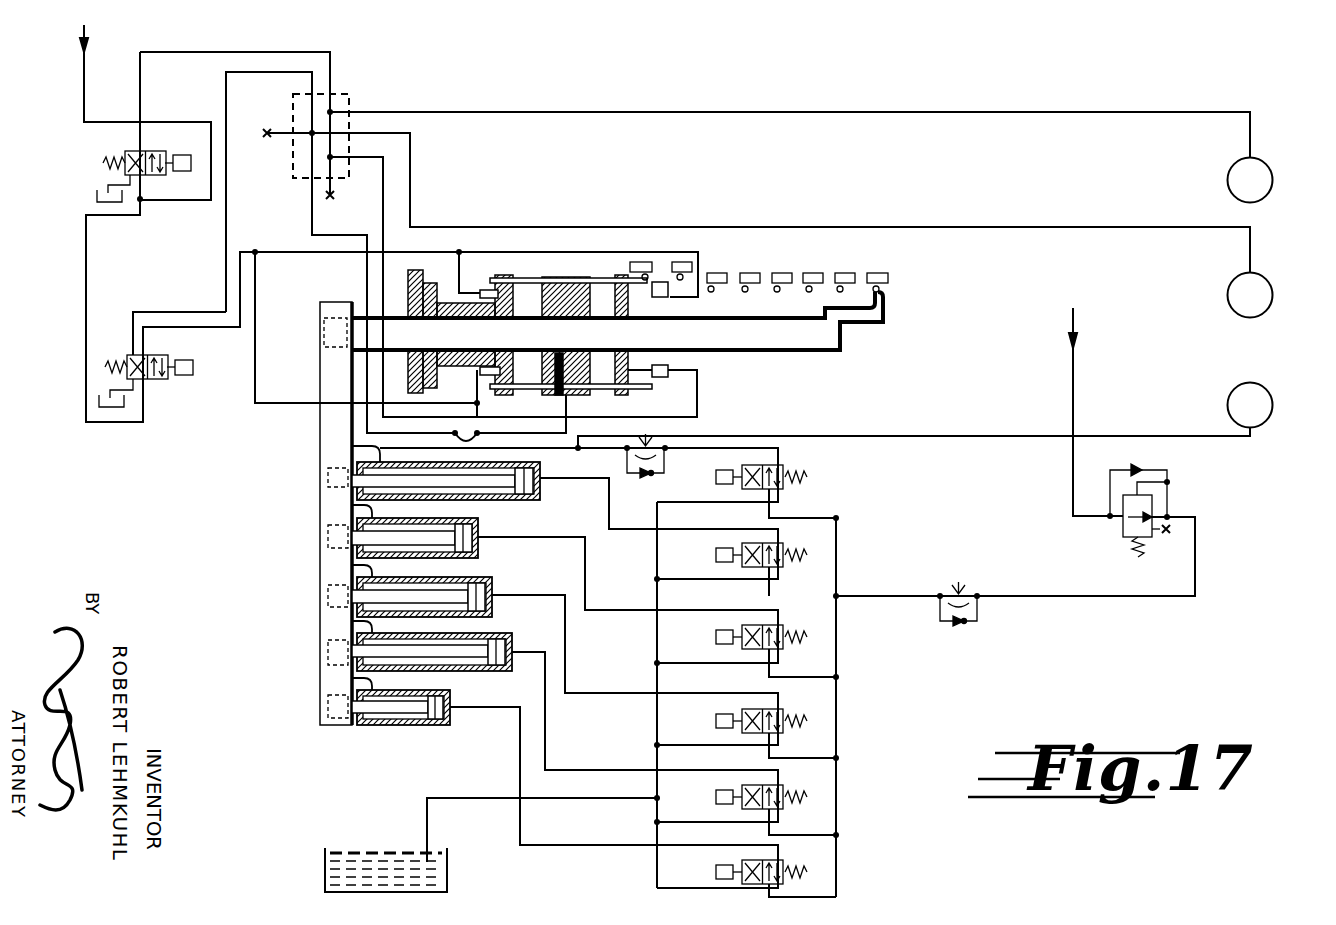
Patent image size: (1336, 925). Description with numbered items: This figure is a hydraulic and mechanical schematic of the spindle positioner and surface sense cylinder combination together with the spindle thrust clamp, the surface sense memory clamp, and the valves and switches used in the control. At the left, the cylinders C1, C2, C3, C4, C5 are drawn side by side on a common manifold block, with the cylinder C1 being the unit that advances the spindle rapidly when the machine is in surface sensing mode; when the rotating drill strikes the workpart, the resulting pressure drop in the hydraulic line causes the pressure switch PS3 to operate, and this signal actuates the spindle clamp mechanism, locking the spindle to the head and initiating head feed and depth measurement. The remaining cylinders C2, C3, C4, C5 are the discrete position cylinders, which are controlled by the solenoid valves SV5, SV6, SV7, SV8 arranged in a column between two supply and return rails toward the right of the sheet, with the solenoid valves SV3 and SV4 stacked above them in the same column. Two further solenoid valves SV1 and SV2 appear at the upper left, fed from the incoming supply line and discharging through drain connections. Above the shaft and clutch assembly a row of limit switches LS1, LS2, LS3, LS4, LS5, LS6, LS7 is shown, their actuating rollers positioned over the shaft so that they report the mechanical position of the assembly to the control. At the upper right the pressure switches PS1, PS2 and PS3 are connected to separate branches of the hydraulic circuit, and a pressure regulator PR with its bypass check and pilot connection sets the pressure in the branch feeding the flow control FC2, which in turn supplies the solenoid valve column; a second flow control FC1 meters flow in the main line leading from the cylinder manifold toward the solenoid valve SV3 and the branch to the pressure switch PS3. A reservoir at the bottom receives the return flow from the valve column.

The solenoid valve SV1 is at (103, 159).
The solenoid valve SV2 is at (102, 365).
The solenoid valve SV3 is at (807, 477).
The solenoid valve SV4 is at (807, 555).
The solenoid valve SV5 is at (807, 637).
The solenoid valve SV6 is at (807, 721).
The solenoid valve SV7 is at (807, 797).
The solenoid valve SV8 is at (807, 872).
The cylinder C1 is at (352, 446).
The cylinder C2 is at (352, 510).
The cylinder C3 is at (352, 572).
The cylinder C4 is at (352, 628).
The cylinder C5 is at (352, 687).
The limit switch LS1 is at (636, 262).
The limit switch LS2 is at (680, 262).
The limit switch LS3 is at (713, 273).
The limit switch LS4 is at (748, 273).
The limit switch LS5 is at (814, 273).
The limit switch LS6 is at (843, 273).
The limit switch LS7 is at (880, 273).
The pressure switch PS1 is at (1266, 166).
The pressure switch PS2 is at (1266, 280).
The pressure switch PS3 is at (1270, 396).
The flow control valve FC1 is at (668, 448).
The flow control valve FC2 is at (976, 595).
The pressure regulator PR is at (1164, 498).